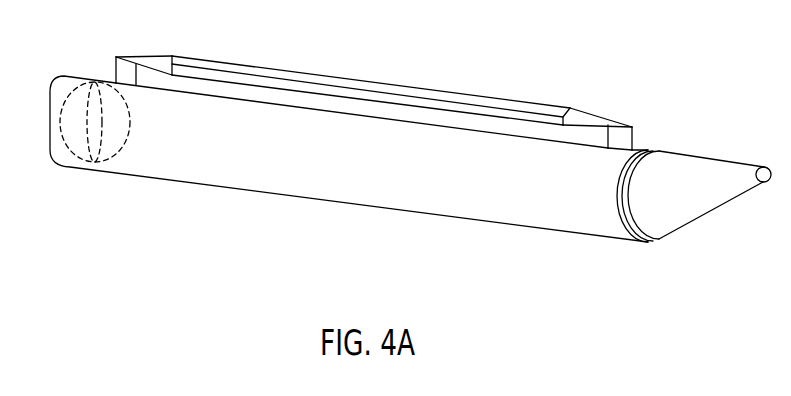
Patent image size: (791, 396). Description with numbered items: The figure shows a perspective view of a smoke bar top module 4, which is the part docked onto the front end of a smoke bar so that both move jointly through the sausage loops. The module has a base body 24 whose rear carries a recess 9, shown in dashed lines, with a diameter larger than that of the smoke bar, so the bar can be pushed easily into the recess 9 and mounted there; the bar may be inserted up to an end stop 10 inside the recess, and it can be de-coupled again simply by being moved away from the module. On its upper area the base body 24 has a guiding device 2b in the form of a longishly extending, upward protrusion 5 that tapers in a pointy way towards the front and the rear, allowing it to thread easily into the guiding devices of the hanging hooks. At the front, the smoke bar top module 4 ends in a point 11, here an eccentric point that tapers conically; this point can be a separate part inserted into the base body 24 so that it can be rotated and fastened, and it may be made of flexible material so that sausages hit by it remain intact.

The guiding device 2b is at (384, 69).
The smoke bar top module 4 is at (262, 180).
The protrusion 5 is at (285, 70).
The recess 9 is at (75, 102).
The end stop 10 is at (111, 112).
The point 11 is at (715, 158).
The base body 24 is at (337, 189).